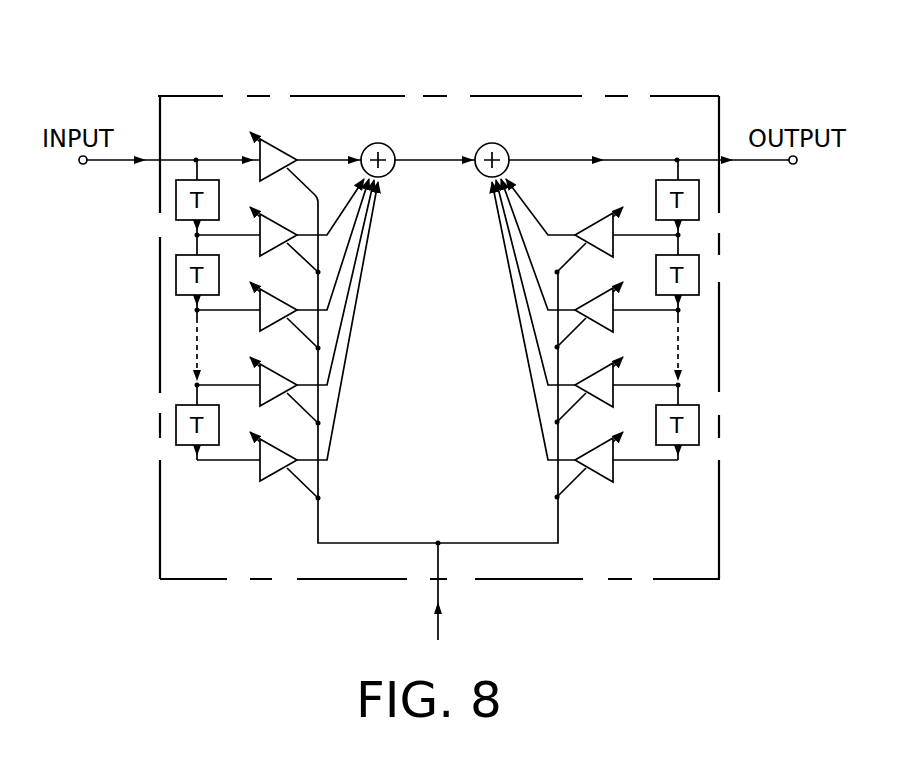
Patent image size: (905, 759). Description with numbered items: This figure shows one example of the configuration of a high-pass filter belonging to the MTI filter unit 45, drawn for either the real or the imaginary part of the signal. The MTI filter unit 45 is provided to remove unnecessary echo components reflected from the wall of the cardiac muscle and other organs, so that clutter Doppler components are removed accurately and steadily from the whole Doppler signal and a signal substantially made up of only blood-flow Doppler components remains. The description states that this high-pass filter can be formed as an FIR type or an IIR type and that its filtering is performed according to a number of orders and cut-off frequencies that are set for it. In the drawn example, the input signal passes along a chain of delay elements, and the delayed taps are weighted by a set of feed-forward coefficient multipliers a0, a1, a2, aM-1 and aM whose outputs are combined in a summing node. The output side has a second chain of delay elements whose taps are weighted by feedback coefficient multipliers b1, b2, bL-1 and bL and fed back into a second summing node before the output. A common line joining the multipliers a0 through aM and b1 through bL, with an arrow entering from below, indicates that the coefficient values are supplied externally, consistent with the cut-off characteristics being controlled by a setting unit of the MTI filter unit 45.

The MTI filter unit 45 is at (568, 93).
The feed-forward coefficient multiplier a0 is at (404, 330).
The feed-forward coefficient multiplier a1 is at (307, 225).
The feed-forward coefficient multiplier a2 is at (309, 263).
The feed-forward coefficient multiplier aM-1 is at (312, 301).
The feed-forward coefficient multiplier aM is at (314, 340).
The feedback coefficient multiplier b1 is at (564, 225).
The feedback coefficient multiplier b2 is at (562, 263).
The feedback coefficient multiplier bL-1 is at (559, 301).
The feedback coefficient multiplier bL is at (557, 339).